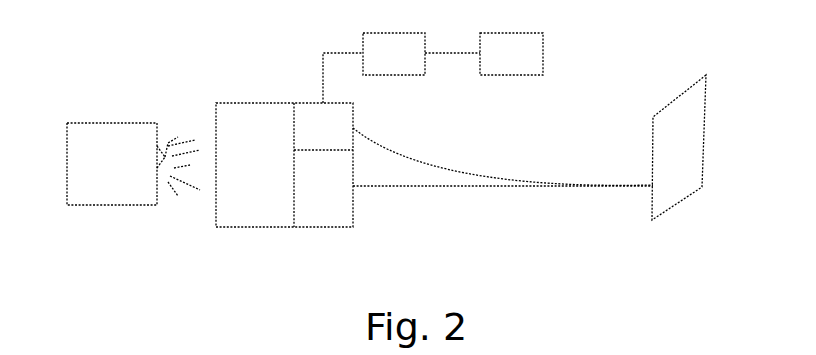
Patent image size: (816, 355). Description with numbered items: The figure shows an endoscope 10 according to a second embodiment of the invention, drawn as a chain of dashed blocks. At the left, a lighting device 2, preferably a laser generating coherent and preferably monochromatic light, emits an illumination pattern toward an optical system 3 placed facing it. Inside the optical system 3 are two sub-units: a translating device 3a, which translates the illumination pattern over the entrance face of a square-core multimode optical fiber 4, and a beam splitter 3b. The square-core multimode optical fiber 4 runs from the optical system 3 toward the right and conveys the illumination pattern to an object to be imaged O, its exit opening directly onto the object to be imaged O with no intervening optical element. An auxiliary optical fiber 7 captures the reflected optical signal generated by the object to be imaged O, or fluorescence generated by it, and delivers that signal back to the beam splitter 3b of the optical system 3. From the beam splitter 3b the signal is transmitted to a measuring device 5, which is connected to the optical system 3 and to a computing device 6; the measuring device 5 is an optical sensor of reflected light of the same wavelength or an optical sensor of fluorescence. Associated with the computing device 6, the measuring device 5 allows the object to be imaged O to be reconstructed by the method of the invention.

The lighting device 2 is at (110, 122).
The optical system 3 is at (284, 123).
The translating device 3a is at (240, 179).
The beam splitter 3b is at (309, 140).
The square-core multimode optical fiber 4 is at (492, 187).
The measuring device 5 is at (385, 66).
The computing device 6 is at (502, 66).
The auxiliary optical fiber 7 is at (425, 162).
The endoscope 10 is at (392, 267).
The object to be imaged O is at (680, 100).